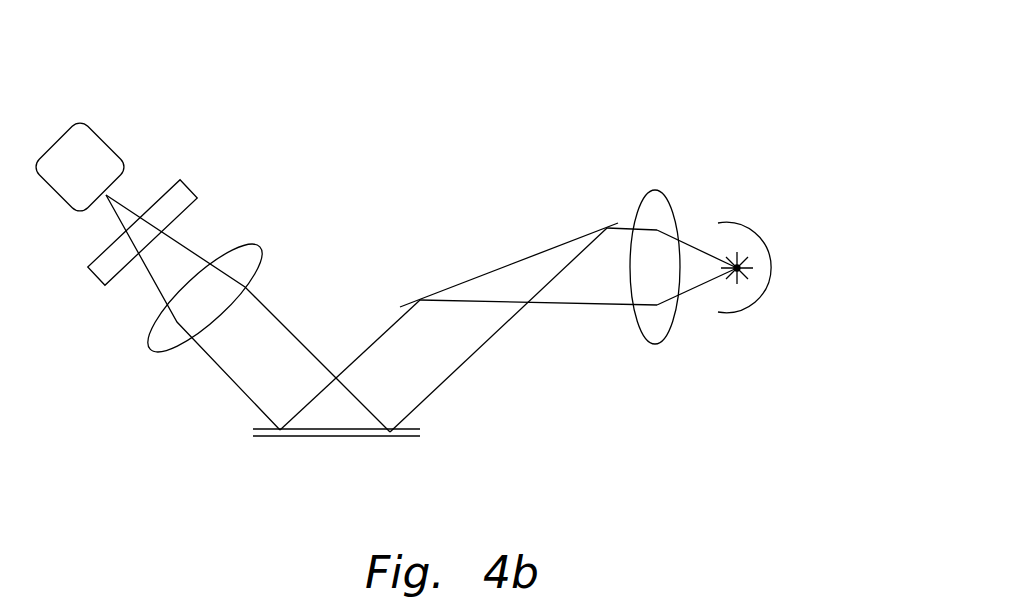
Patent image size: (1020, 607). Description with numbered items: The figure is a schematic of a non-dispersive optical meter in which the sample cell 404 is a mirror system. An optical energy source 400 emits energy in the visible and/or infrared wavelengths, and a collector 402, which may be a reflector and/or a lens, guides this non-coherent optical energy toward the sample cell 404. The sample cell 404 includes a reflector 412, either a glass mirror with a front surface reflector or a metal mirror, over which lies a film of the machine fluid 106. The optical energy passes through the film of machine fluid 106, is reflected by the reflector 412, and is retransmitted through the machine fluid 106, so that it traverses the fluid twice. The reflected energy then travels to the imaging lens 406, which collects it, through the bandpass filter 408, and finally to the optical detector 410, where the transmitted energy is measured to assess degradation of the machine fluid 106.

The optical energy source 400 is at (795, 243).
The collector 402 is at (673, 320).
The sample cell 404 is at (494, 241).
The imaging lens 406 is at (150, 351).
The bandpass filter 408 is at (181, 180).
The optical detector 410 is at (92, 122).
The reflector 412 is at (317, 437).
The machine fluid 106 is at (422, 433).